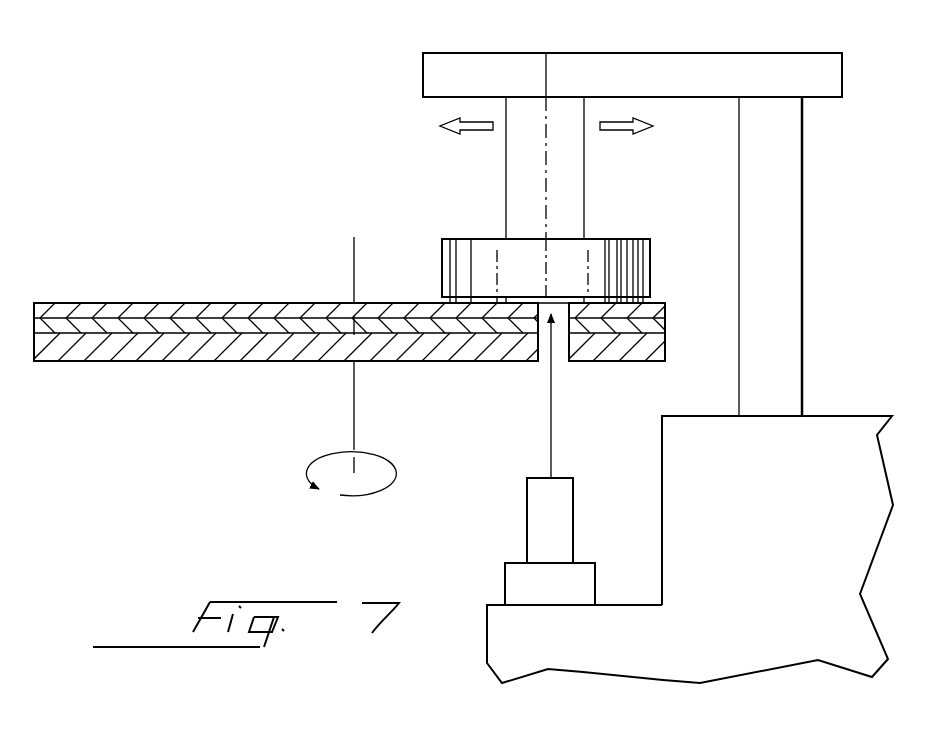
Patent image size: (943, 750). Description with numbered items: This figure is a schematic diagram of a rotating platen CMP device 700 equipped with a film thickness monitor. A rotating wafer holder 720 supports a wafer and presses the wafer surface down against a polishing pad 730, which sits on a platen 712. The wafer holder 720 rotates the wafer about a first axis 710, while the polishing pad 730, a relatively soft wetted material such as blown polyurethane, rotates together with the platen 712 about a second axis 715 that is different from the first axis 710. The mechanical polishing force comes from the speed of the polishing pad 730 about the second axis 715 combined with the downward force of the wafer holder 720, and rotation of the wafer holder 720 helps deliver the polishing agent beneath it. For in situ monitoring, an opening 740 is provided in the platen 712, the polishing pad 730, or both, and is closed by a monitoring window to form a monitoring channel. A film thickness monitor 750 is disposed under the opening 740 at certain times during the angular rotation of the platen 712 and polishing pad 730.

The polishing system 700 is at (206, 138).
The first axis 710 is at (548, 51).
The platen 712 is at (30, 347).
The second axis 715 is at (350, 236).
The wafer holder 720 is at (704, 223).
The polishing pad 730 is at (87, 296).
The opening 740 is at (546, 352).
The film thickness monitor 750 is at (503, 579).